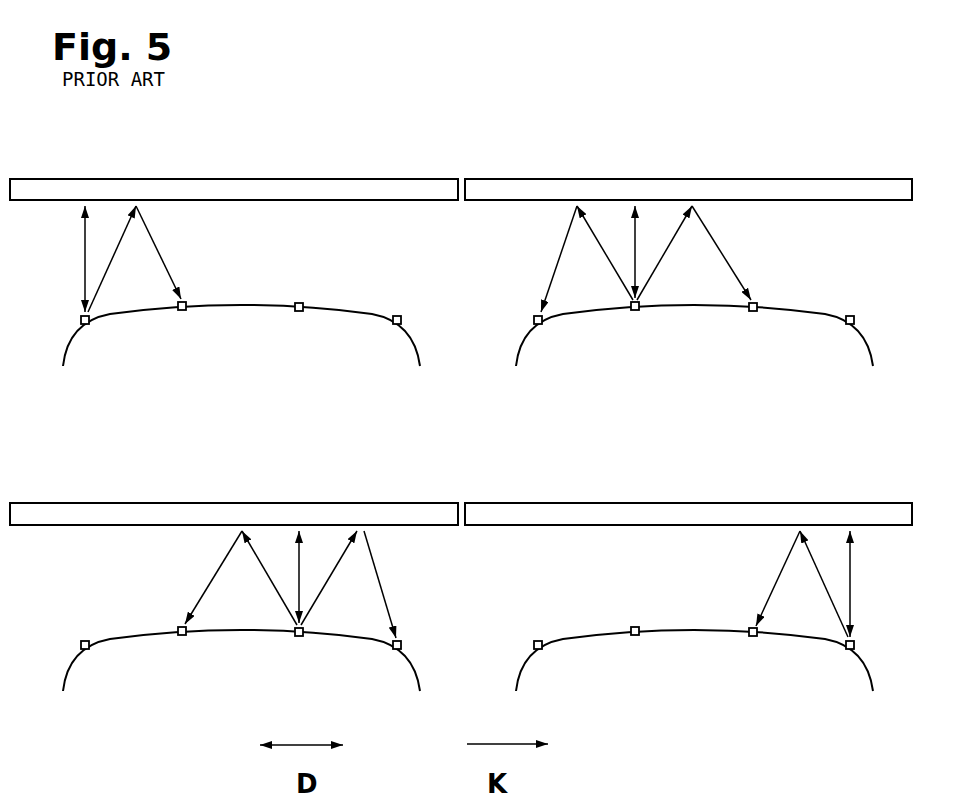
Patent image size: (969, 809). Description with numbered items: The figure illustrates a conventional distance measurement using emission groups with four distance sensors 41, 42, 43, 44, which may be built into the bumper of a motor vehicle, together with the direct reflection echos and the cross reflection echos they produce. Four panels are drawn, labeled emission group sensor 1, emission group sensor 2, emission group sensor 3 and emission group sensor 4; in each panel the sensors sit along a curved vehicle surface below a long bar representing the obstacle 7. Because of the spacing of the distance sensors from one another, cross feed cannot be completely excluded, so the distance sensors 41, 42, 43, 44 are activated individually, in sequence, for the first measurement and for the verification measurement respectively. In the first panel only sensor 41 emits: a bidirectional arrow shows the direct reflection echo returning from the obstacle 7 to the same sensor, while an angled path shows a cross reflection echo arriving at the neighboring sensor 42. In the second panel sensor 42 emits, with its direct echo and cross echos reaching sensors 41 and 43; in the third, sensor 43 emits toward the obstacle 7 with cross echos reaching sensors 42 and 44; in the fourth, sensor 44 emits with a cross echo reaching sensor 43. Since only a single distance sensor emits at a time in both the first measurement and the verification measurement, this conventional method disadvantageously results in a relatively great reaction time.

The obstacle 7 is at (461, 311).
The emission group sensor 1 is at (234, 164).
The emission group sensor 2 is at (688, 164).
The emission group sensor 3 is at (234, 499).
The distance sensor 4 is at (688, 499).
The first distance sensor 41 is at (324, 505).
The second distance sensor 42 is at (417, 491).
The third distance sensor 43 is at (523, 492).
The fourth distance sensor 44 is at (617, 505).